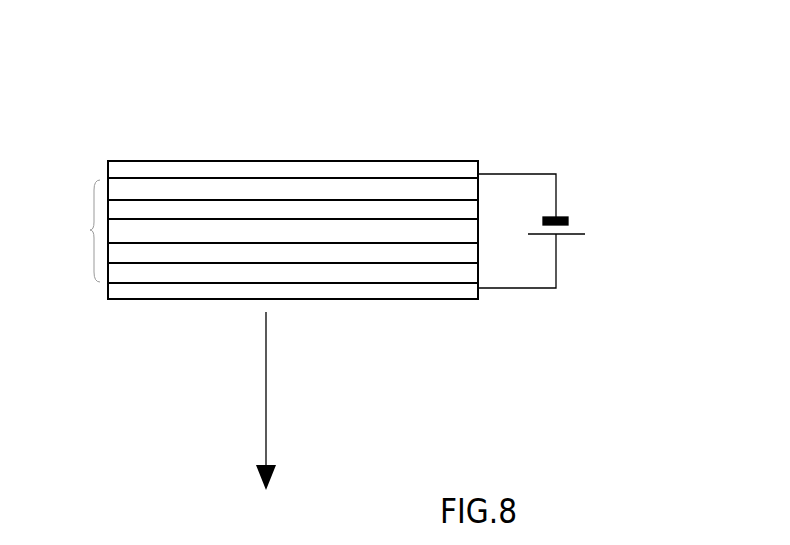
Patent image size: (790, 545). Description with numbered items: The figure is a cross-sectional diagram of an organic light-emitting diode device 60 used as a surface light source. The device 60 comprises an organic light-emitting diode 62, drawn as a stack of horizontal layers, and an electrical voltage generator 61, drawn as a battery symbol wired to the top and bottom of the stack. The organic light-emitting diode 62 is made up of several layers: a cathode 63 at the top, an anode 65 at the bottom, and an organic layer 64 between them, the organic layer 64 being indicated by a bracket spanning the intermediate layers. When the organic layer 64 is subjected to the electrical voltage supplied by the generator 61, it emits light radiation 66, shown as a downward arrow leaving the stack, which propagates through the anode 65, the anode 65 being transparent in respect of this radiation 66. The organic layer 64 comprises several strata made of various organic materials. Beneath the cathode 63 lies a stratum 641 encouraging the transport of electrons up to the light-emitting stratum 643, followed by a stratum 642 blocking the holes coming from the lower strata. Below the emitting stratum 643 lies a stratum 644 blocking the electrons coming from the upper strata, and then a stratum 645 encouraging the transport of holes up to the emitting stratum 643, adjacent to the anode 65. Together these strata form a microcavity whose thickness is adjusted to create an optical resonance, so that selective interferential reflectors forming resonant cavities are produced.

The organic light-emitting diode device 60 is at (600, 150).
The electrical voltage generator 61 is at (563, 240).
The organic light-emitting diode 62 is at (197, 152).
The cathode 63 is at (455, 169).
The organic layer 64 is at (269, 230).
The electron transport stratum 641 is at (412, 190).
The hole blocking stratum 642 is at (358, 210).
The light-emitting stratum 643 is at (148, 232).
The electron blocking stratum 644 is at (407, 252).
The hole transport stratum 645 is at (361, 275).
The anode 65 is at (305, 290).
The light radiation 66 is at (266, 388).